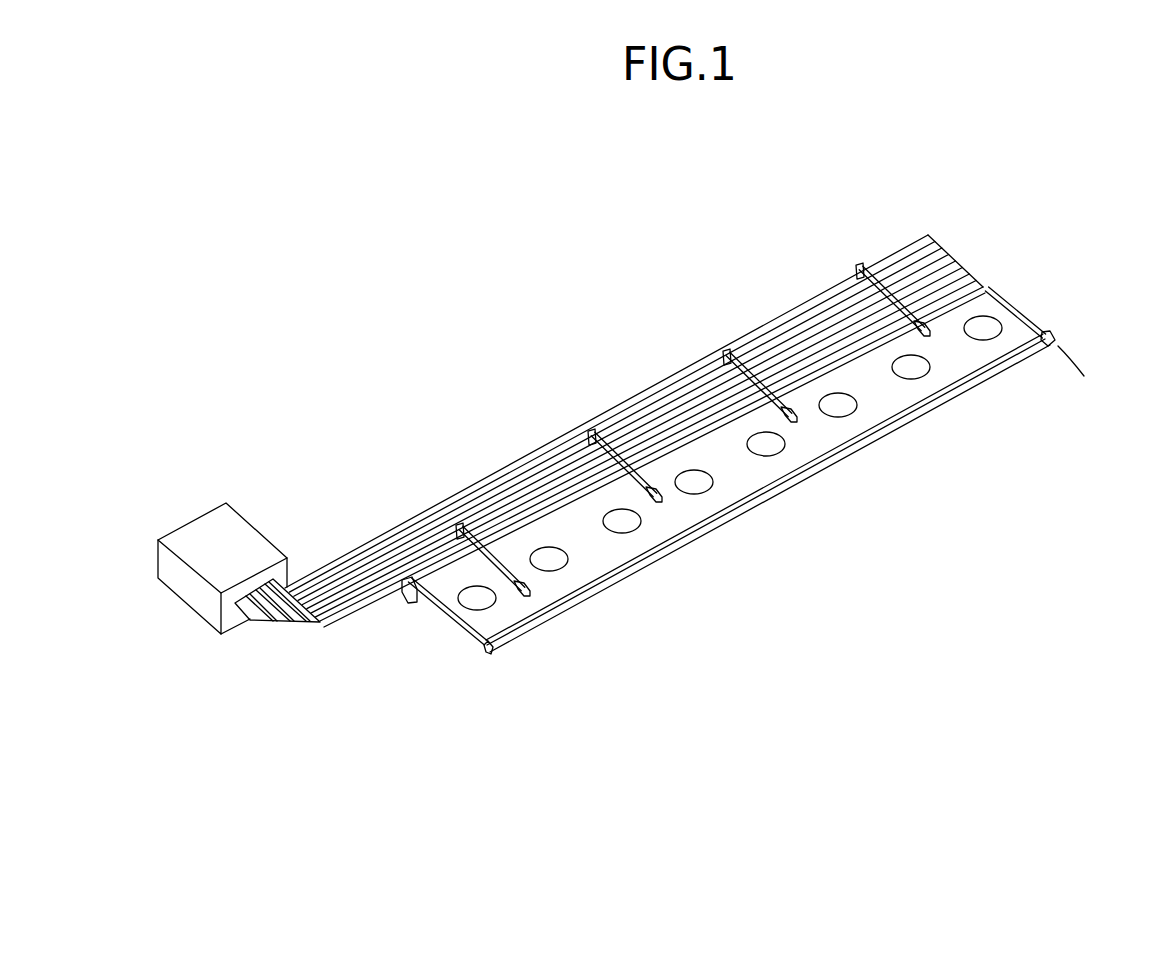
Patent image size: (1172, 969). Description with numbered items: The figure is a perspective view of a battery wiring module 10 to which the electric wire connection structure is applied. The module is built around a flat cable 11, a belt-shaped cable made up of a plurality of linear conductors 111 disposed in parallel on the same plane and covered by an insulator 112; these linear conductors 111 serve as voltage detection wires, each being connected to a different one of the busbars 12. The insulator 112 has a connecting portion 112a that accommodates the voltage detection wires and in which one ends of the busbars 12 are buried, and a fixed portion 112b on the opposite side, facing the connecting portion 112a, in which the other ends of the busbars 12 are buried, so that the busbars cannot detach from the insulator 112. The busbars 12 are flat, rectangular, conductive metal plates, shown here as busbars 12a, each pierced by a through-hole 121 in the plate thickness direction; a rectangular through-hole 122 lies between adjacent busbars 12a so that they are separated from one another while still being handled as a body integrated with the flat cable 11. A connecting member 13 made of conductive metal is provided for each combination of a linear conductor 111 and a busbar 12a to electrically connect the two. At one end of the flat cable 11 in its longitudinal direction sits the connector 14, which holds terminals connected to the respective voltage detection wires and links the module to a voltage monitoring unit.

The battery wiring module 10 is at (806, 199).
The flat cable 11 is at (889, 236).
The linear conductors 111 is at (363, 584).
The insulator 112 is at (1105, 176).
The connecting portion 112a is at (940, 257).
The fixed portion 112b is at (1040, 317).
The busbars 12 is at (750, 650).
The busbar 12a is at (583, 570).
The through-holes 121 is at (479, 603).
The rectangular through-hole 122 is at (550, 568).
The connecting member 13 is at (858, 266).
The connector 14 is at (219, 513).